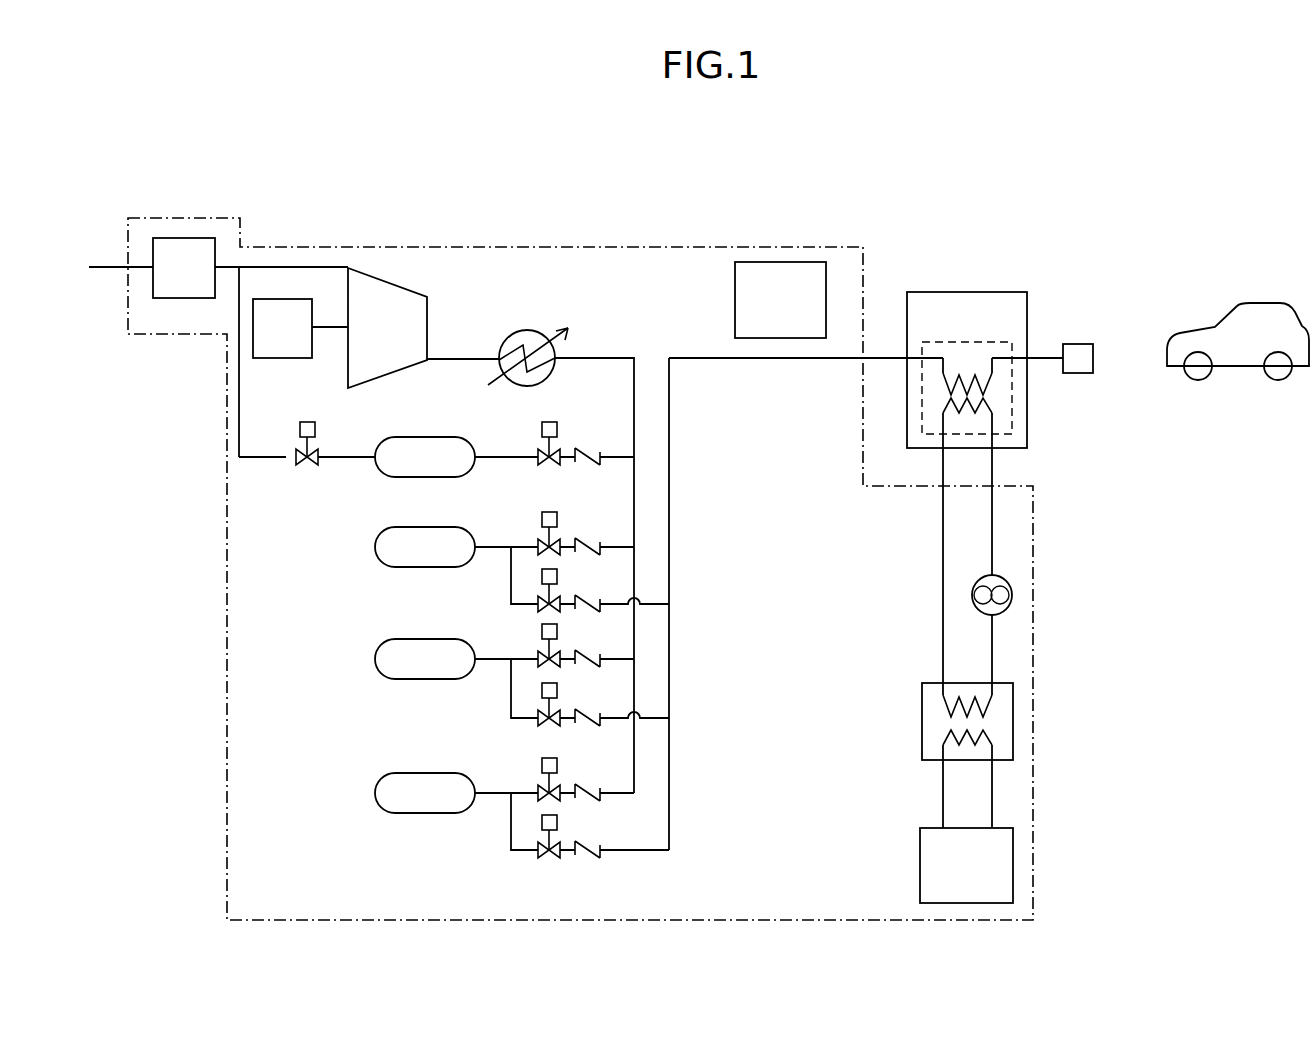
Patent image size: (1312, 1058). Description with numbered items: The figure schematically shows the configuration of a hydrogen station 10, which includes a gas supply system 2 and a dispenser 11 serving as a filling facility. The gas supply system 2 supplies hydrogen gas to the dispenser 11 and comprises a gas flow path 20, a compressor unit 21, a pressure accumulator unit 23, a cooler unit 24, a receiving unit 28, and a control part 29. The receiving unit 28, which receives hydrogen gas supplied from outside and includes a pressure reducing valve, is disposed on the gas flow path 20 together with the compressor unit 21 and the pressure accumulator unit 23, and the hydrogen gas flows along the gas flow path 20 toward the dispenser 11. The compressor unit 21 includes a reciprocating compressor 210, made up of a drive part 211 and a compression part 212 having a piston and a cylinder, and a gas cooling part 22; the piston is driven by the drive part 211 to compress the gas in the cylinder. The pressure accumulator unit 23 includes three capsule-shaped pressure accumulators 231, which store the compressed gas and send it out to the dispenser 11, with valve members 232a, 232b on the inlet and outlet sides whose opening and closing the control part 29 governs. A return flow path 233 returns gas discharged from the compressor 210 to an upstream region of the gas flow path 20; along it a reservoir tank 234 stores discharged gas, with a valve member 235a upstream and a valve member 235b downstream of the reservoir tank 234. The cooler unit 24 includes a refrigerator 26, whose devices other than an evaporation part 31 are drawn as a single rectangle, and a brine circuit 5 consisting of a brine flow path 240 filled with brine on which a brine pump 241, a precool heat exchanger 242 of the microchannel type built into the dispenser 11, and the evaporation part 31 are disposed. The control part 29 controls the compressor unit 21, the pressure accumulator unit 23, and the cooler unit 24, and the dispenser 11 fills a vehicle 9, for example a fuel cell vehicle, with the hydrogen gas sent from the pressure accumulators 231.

The gas supply system 2 is at (878, 270).
The brine circuit 5 is at (1063, 548).
The vehicle 9 is at (1234, 367).
The hydrogen station 10 is at (1023, 341).
The dispenser 11 is at (1023, 365).
The gas flow path 20 is at (262, 267).
The compressor unit 21 is at (418, 141).
The gas cooling part 22 is at (526, 313).
The pressure accumulator unit 23 is at (428, 623).
The cooler unit 24 is at (1114, 781).
The refrigerator 26 is at (1140, 752).
The receiving unit 28 is at (180, 224).
The control part 29 is at (797, 262).
The evaporation part 31 is at (1013, 712).
The reciprocating compressor 210 is at (349, 271).
The drive part 211 is at (290, 299).
The compression part 212 is at (391, 294).
The pressure accumulator 231 is at (375, 547).
The valve member 232a is at (557, 519).
The valve member 232b is at (557, 576).
The return flow path 233 is at (239, 440).
The reservoir tank 234 is at (395, 478).
The valve member 235a is at (557, 429).
The valve member 235b is at (302, 423).
The brine flow path 240 is at (994, 648).
The brine pump 241 is at (1008, 586).
The precool heat exchanger 242 is at (1015, 413).